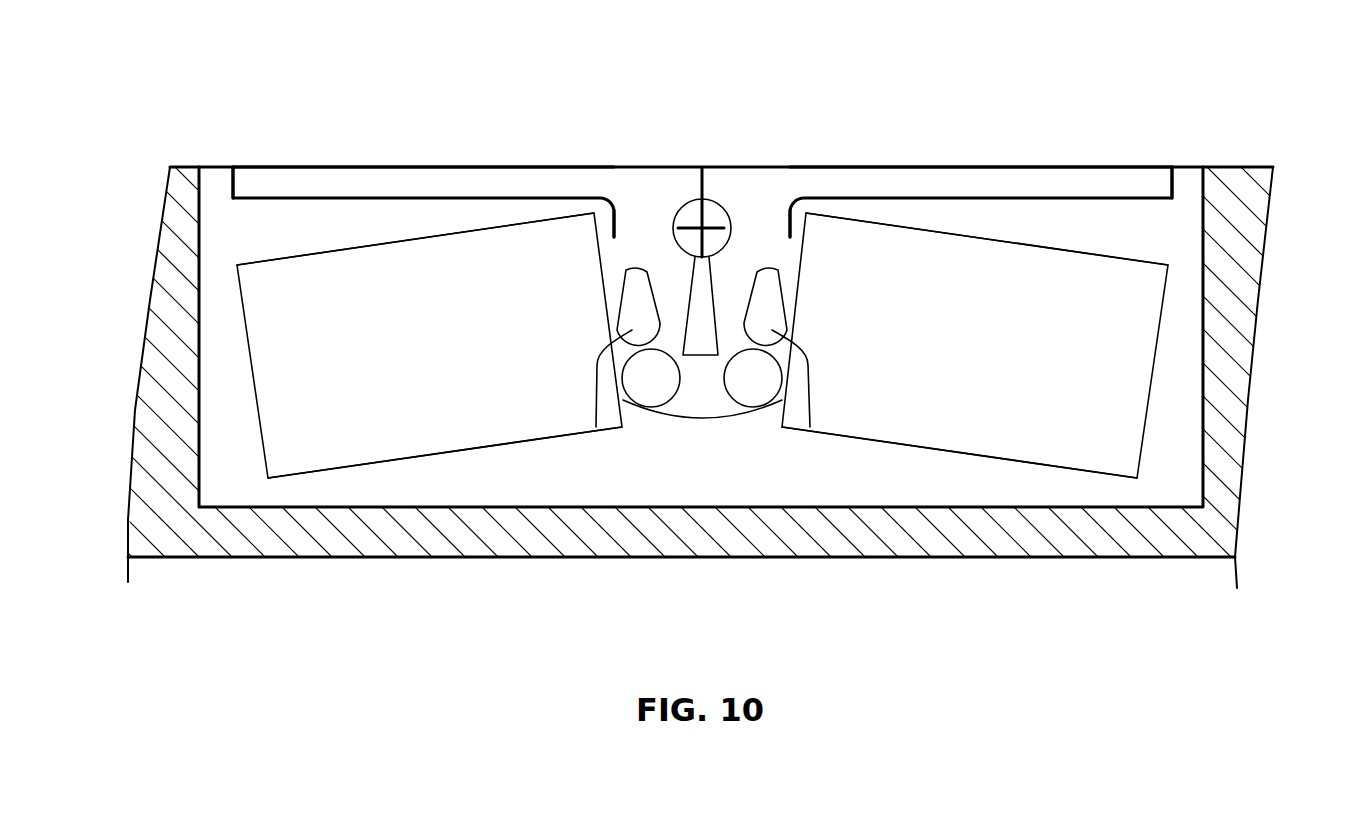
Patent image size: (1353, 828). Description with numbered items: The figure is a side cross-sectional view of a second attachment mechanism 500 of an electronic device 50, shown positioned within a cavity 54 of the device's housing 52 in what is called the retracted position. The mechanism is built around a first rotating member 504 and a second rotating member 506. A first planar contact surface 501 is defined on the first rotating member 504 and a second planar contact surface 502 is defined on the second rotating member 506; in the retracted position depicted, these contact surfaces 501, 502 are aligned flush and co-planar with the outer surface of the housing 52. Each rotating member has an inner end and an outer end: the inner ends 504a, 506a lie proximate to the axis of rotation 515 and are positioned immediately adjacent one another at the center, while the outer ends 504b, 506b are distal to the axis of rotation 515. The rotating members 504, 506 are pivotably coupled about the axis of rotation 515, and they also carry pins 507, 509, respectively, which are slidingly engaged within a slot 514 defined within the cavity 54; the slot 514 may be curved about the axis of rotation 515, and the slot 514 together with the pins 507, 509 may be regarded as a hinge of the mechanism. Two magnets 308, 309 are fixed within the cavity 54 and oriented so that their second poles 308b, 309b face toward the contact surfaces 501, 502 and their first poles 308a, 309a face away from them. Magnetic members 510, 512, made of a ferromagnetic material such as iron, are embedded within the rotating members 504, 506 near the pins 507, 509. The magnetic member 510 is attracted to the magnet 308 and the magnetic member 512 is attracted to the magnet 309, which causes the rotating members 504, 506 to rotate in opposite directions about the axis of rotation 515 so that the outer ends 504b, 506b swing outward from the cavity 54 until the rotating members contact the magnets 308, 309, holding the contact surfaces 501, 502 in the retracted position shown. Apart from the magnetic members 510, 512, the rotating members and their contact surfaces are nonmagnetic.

The electronic device 50 is at (213, 77).
The housing 52 is at (230, 557).
The cavity 54 is at (222, 418).
The second attachment mechanism 500 is at (492, 70).
The first planar contact surface 501 is at (530, 167).
The second planar contact surface 502 is at (1030, 167).
The first rotating member 504 is at (328, 160).
The inner end of first rotating member 504a is at (690, 160).
The outer end of first rotating member 504b is at (226, 182).
The second rotating member 506 is at (1108, 160).
The inner end of second rotating member 506a is at (711, 160).
The outer end of second rotating member 506b is at (1181, 180).
The pin 507 is at (665, 413).
The pin 509 is at (740, 413).
The magnetic member 510 is at (596, 427).
The magnetic member 512 is at (807, 427).
The slot 514 is at (680, 212).
The axis of rotation 515 is at (718, 214).
The magnet 308 is at (247, 325).
The first pole 308a is at (430, 470).
The second pole 308b is at (433, 228).
The magnet 309 is at (1153, 352).
The first pole 309a is at (938, 470).
The second pole 309b is at (937, 224).